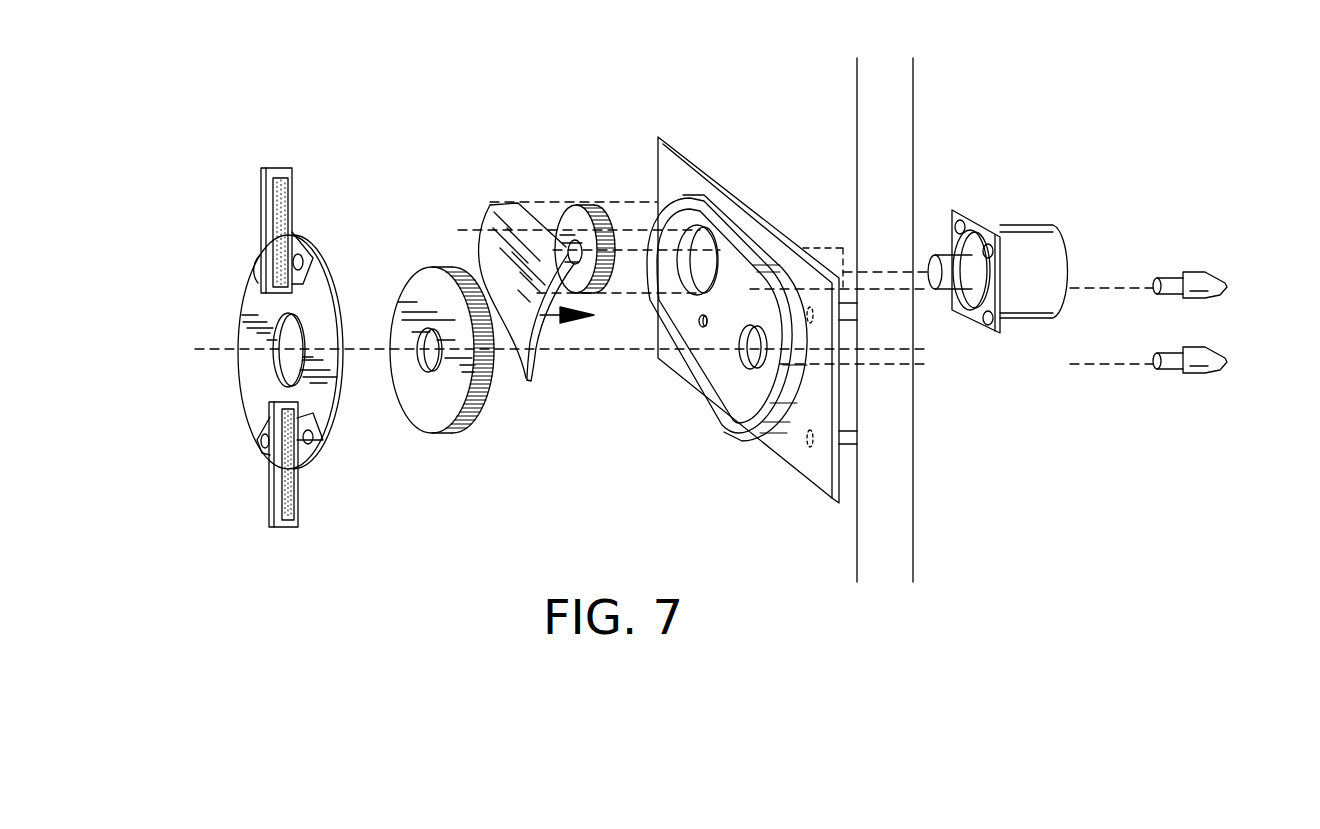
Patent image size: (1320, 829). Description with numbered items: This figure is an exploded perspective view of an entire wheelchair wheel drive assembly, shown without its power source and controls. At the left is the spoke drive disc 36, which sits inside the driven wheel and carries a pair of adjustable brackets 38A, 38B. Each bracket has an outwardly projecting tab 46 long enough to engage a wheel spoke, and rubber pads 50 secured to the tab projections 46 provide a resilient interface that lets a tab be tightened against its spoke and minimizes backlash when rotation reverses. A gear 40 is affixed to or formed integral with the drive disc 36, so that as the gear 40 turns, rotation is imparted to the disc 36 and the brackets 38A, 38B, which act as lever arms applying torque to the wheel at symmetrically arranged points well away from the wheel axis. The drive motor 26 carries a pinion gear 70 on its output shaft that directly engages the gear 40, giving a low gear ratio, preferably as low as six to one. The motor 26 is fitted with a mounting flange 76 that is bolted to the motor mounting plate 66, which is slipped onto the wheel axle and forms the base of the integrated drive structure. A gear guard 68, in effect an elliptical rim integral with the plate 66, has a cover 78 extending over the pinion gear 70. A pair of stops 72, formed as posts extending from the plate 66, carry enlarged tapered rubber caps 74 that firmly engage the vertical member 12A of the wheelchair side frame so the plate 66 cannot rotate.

The vertical member 12A is at (893, 165).
The drive motor 26 is at (1040, 262).
The spoke drive disc 36 is at (323, 262).
The bracket 38A is at (260, 200).
The bracket 38B is at (261, 495).
The gear 40 is at (452, 433).
The tab 46 is at (325, 495).
The rubber pad 50 is at (298, 497).
The motor mounting plate 66 is at (690, 188).
The gear guard 68 is at (753, 253).
The pinion gear 70 is at (585, 203).
The stop 72 is at (1163, 278).
The rubber cap 74 is at (1223, 280).
The mounting flange 76 is at (960, 207).
The cover 78 is at (495, 242).